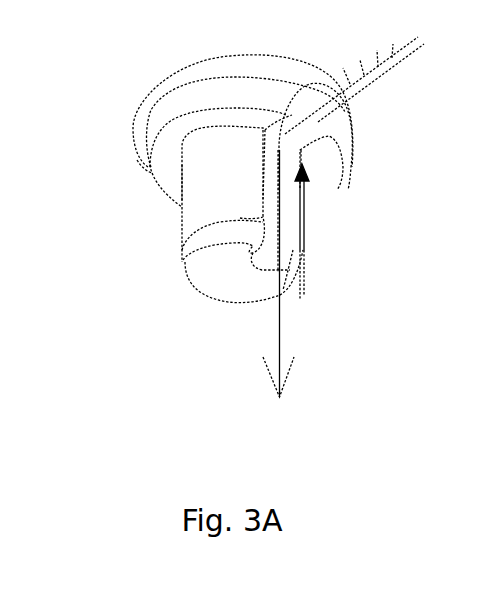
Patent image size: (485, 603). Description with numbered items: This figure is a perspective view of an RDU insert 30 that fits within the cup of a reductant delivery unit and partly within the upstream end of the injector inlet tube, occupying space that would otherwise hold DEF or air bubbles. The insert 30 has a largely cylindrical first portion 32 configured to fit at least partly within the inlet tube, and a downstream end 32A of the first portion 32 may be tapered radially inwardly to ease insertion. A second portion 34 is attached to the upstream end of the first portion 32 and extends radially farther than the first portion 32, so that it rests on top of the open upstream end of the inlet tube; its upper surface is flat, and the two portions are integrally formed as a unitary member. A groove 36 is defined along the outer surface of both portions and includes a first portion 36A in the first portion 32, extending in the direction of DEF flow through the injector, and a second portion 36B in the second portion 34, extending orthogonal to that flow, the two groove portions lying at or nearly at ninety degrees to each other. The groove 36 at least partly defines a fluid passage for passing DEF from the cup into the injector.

The RDU insert 30 is at (50, 30).
The first portion 32 is at (197, 213).
The downstream end of first portion 32A is at (200, 248).
The second portion 34 is at (280, 76).
The groove 36 is at (303, 170).
The first portion of groove 36A is at (288, 238).
The second portion of groove 36B is at (320, 118).